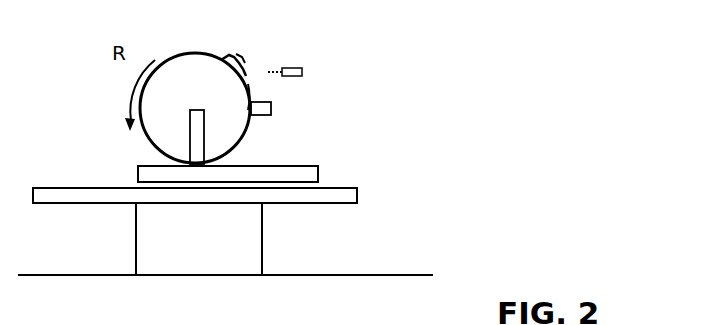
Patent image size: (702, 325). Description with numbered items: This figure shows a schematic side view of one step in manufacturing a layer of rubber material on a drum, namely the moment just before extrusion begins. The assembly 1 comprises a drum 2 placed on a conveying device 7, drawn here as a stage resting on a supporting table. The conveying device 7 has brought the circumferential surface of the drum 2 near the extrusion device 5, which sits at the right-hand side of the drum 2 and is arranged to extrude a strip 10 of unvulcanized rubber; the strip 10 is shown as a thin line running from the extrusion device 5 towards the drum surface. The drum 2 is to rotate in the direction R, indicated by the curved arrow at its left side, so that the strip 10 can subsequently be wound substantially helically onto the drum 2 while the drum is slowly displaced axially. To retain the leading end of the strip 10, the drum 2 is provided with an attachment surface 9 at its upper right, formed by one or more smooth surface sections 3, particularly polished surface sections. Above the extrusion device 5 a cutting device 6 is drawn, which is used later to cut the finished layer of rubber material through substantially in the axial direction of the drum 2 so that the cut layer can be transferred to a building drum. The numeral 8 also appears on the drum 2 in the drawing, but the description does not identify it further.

The assembly 1 is at (80, 64).
The drum 2 is at (197, 67).
The smooth surface sections 3 is at (216, 321).
The extrusion device 5 is at (272, 108).
The cutting device 6 is at (302, 72).
The conveying device 7 is at (379, 160).
The photosensitive layer 8 is at (245, 86).
The attachment surface 9 is at (237, 57).
The strip 10 is at (250, 97).